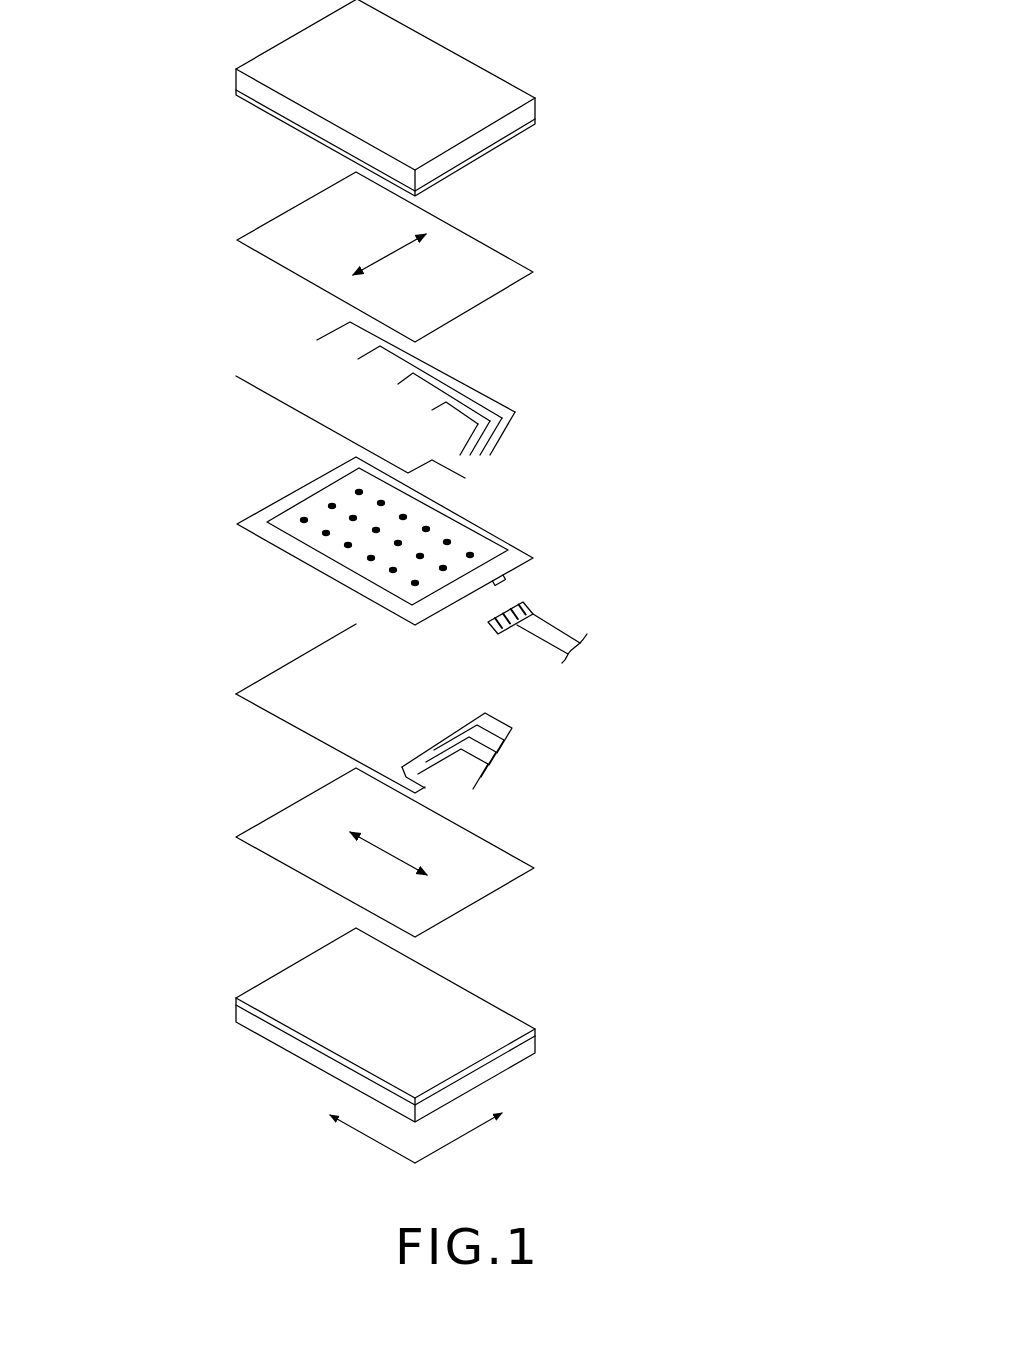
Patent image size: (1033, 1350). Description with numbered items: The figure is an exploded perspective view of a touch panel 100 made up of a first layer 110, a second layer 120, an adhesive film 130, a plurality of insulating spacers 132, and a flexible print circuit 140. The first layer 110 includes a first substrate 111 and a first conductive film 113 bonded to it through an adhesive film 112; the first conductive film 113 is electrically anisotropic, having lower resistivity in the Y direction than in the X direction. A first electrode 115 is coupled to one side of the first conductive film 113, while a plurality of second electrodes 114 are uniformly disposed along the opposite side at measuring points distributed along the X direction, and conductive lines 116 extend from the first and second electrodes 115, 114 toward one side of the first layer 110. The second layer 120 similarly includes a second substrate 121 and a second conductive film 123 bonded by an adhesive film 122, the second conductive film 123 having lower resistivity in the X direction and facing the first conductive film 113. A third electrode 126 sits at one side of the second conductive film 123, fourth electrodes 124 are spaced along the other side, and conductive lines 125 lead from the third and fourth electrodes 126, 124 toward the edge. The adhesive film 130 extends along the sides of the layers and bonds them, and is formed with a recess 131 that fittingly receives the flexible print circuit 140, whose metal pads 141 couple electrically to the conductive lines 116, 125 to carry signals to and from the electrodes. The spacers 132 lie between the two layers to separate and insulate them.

The touch panel 100 is at (163, 27).
The first layer 110 is at (610, 1065).
The first substrate 111 is at (525, 1053).
The adhesive film 112 is at (502, 1028).
The first conductive film 113 is at (502, 868).
The second electrodes 114 is at (442, 735).
The first electrode 115 is at (298, 663).
The conductive lines 116 is at (327, 745).
The second layer 120 is at (678, 58).
The second substrate 121 is at (490, 88).
The adhesive film 122 is at (502, 143).
The second conductive film 123 is at (490, 262).
The fourth electrodes 124 is at (440, 418).
The conductive lines 125 is at (473, 388).
The third electrode 126 is at (262, 390).
The adhesive film 130 is at (492, 530).
The recess 131 is at (503, 573).
The spacers 132 is at (305, 514).
The flexible print circuit 140 is at (560, 633).
The metal pads 141 is at (535, 605).